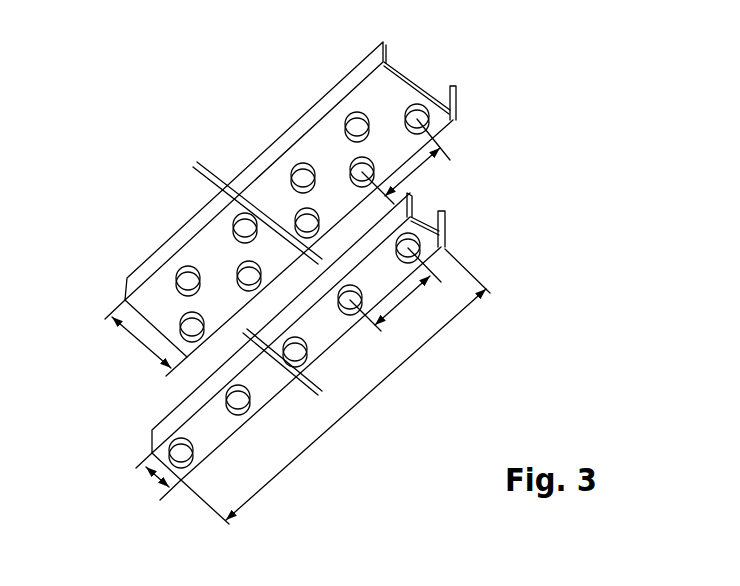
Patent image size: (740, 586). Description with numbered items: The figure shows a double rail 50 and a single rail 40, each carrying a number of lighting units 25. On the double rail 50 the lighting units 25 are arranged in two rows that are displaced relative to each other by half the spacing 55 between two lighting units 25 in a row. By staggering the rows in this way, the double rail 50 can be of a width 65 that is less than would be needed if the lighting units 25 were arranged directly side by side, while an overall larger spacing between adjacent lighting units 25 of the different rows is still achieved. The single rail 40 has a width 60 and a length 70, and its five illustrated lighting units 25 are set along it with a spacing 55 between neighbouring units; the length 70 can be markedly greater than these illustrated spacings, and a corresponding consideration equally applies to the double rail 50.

The lighting units 25 is at (293, 168).
The single rail 40 is at (446, 228).
The double rail 50 is at (388, 48).
The spacing 55 is at (413, 177).
The width 60 is at (150, 476).
The width 65 is at (139, 341).
The length 70 is at (262, 486).